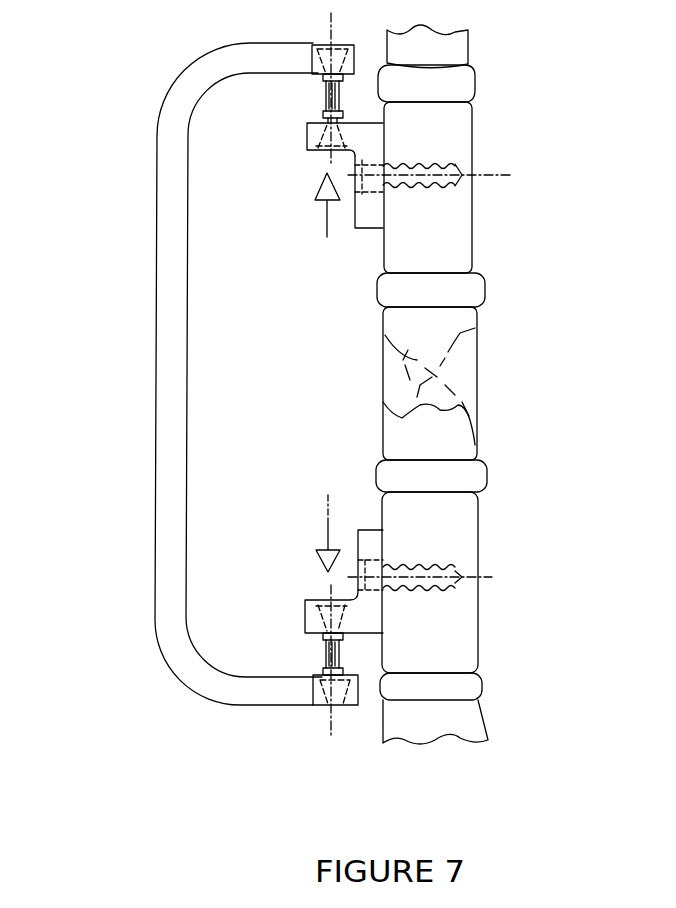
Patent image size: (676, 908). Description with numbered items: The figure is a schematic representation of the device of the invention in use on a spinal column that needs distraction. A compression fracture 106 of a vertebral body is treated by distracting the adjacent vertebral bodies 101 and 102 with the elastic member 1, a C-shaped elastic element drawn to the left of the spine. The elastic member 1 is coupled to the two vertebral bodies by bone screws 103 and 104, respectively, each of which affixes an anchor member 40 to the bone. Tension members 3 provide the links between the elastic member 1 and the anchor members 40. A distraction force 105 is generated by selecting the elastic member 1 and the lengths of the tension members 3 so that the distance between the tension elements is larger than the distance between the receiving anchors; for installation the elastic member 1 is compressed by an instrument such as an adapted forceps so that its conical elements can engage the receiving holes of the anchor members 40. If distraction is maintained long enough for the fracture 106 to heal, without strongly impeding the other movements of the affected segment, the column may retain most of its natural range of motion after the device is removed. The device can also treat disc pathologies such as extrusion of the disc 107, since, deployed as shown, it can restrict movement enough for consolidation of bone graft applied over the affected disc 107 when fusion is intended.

The elastic member 1 is at (168, 220).
The tension members 3 is at (325, 100).
The anchor member 40 is at (370, 218).
The vertebral body 101 is at (457, 633).
The vertebral body 102 is at (448, 145).
The bone screw 103 is at (438, 568).
The bone screw 104 is at (433, 182).
The distraction force 105 is at (328, 518).
The compression fracture 106 is at (455, 387).
The disc 107 is at (452, 480).